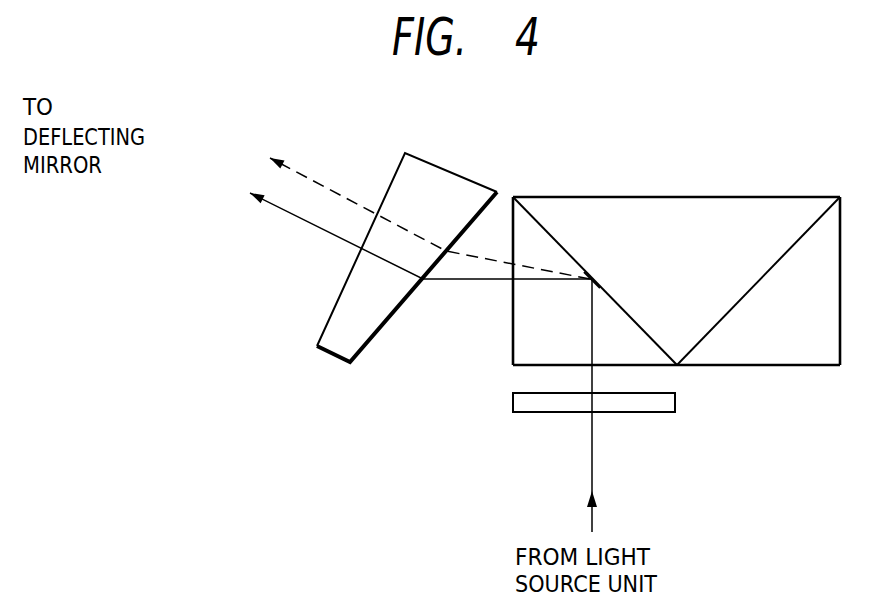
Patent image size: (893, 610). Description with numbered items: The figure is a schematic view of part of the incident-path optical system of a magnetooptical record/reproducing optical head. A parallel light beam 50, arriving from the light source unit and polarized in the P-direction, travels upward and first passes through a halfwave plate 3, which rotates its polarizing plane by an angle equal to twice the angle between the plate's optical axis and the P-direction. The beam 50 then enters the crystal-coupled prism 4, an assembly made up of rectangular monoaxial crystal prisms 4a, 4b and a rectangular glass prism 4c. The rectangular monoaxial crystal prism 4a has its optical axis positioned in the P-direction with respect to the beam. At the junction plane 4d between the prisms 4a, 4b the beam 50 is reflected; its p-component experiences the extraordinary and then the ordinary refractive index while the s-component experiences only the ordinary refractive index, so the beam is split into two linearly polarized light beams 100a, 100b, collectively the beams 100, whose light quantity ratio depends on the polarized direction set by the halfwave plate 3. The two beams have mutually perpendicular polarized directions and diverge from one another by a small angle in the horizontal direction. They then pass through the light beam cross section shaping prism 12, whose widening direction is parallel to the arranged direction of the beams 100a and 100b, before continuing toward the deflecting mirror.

The crystal-coupled prism 4 is at (676, 223).
The rectangular monoaxial crystal prism 4a is at (533, 227).
The rectangular monoaxial crystal prism 4b is at (650, 210).
The rectangular glass prism 4c is at (808, 243).
The junction plane 4d is at (599, 256).
The light beam cross section shaping prism 12 is at (403, 305).
The halfwave plate 3 is at (675, 402).
The parallel light beam 50 is at (592, 474).
The light beams 100 is at (383, 199).
The linearly polarized light beam 100a is at (406, 224).
The linearly polarized light beam 100b is at (246, 120).